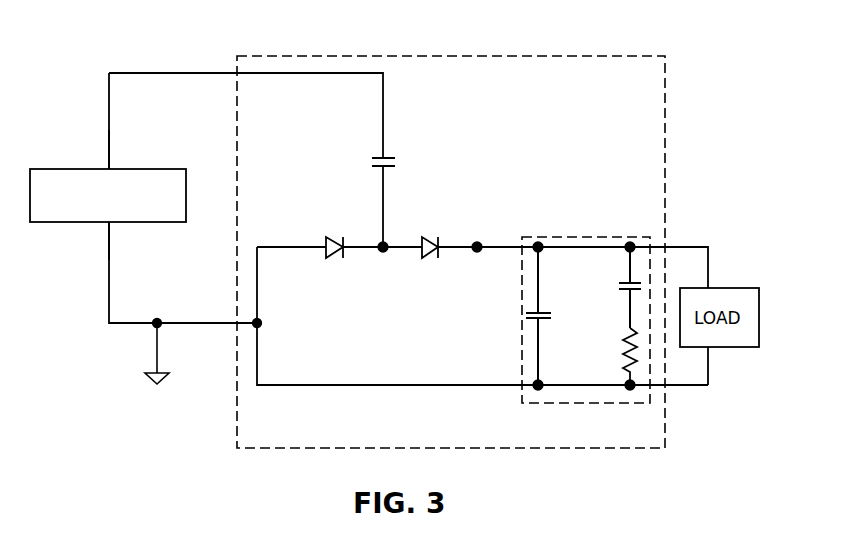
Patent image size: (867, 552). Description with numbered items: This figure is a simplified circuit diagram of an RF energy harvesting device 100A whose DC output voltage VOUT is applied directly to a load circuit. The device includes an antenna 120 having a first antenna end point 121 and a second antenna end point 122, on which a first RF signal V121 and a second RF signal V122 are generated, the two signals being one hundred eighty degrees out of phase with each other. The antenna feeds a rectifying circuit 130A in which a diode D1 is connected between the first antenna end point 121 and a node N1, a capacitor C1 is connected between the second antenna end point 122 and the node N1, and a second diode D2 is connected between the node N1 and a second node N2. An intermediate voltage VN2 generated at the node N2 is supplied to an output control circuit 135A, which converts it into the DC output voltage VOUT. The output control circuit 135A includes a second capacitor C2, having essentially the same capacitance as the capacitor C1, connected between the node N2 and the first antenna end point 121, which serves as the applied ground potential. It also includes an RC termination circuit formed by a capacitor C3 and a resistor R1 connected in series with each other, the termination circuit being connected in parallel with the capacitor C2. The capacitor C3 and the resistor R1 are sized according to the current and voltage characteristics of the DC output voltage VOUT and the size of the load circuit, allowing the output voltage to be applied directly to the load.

The RF energy harvesting device 100A is at (126, 40).
The antenna 120 is at (182, 190).
The first antenna end point 121 is at (110, 233).
The second antenna end point 122 is at (110, 150).
The rectifying circuit 130A is at (451, 252).
The output control circuit 135A is at (592, 236).
The capacitor C1 is at (378, 156).
The second capacitor C2 is at (543, 312).
The capacitor C3 is at (627, 293).
The diode D1 is at (335, 241).
The diode D2 is at (428, 258).
The resistor R1 is at (627, 353).
The node N1 is at (386, 243).
The node N2 is at (480, 243).
The second RF signal V122 is at (109, 128).
The first RF signal V121 is at (109, 250).
The intermediate voltage VN2 is at (476, 253).
The DC output voltage VOUT is at (702, 247).